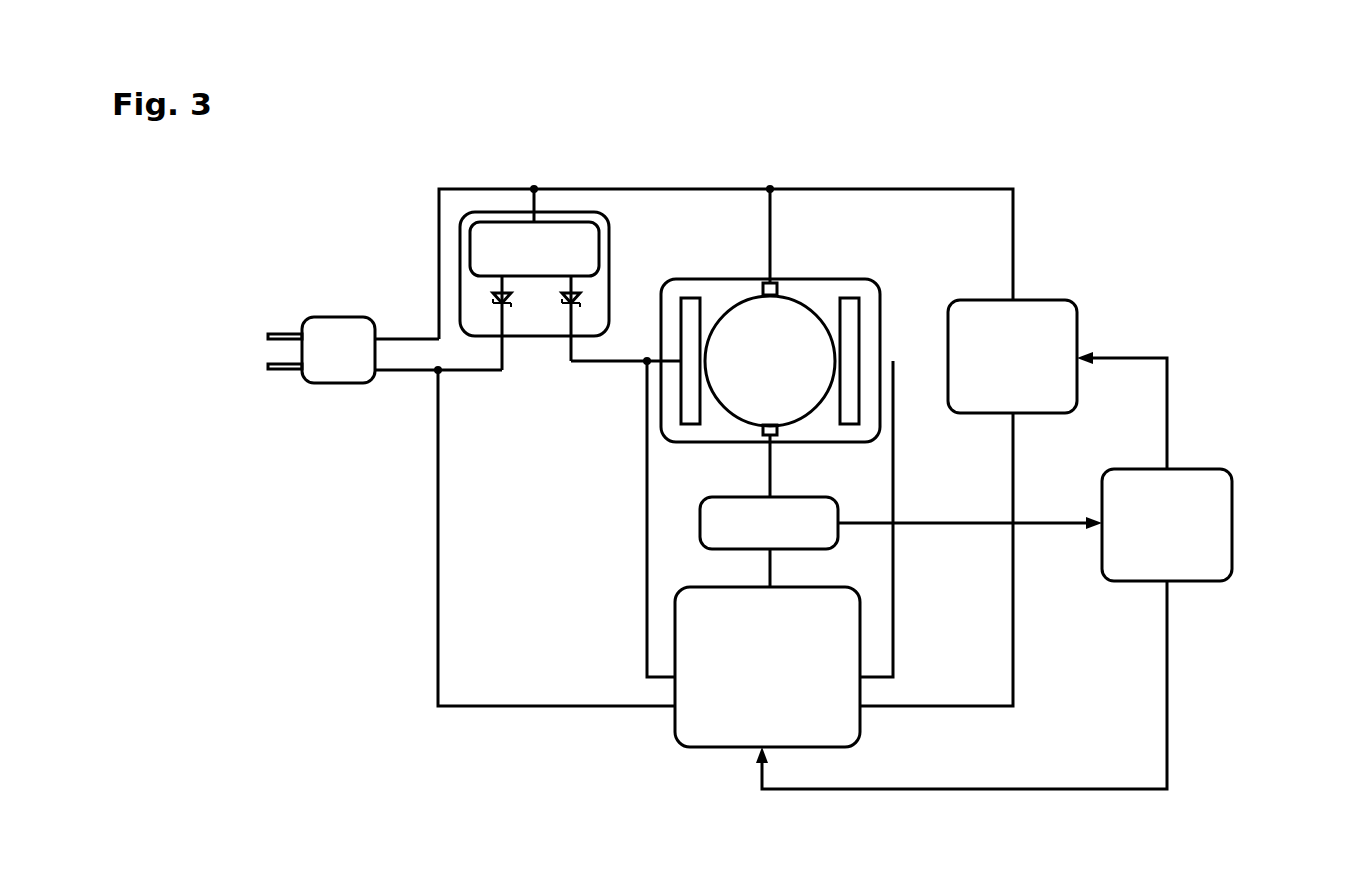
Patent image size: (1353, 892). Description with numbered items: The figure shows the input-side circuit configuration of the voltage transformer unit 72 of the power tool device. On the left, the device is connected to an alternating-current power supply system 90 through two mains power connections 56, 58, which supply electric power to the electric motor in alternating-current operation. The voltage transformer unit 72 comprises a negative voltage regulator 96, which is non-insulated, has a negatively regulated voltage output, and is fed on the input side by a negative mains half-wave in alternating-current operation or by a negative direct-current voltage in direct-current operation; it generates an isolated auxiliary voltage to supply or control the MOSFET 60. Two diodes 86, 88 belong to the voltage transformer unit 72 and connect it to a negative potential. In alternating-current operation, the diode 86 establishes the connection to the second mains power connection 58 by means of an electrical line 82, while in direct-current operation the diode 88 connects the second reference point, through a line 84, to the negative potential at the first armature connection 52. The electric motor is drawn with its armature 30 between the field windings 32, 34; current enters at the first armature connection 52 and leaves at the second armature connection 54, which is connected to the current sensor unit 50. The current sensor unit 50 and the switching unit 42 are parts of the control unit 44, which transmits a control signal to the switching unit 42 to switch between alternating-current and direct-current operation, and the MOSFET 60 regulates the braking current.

The armature 30 is at (738, 296).
The field winding 32 is at (850, 297).
The field winding 34 is at (692, 297).
The switching unit 42 is at (675, 641).
The control unit 44 is at (1232, 523).
The current sensor unit 50 is at (700, 523).
The first armature connection 52 is at (777, 291).
The second armature connection 54 is at (768, 430).
The first mains power connection 56 is at (395, 335).
The second mains power connection 58 is at (398, 373).
The MOSFET 60 is at (1042, 299).
The voltage transformer unit 72 is at (534, 228).
The negative voltage regulator 96 is at (566, 210).
The electrical line 82 is at (465, 373).
The line 84 is at (600, 364).
The diode 86 is at (510, 298).
The diode 88 is at (562, 300).
The alternating-current power supply system 90 is at (323, 318).